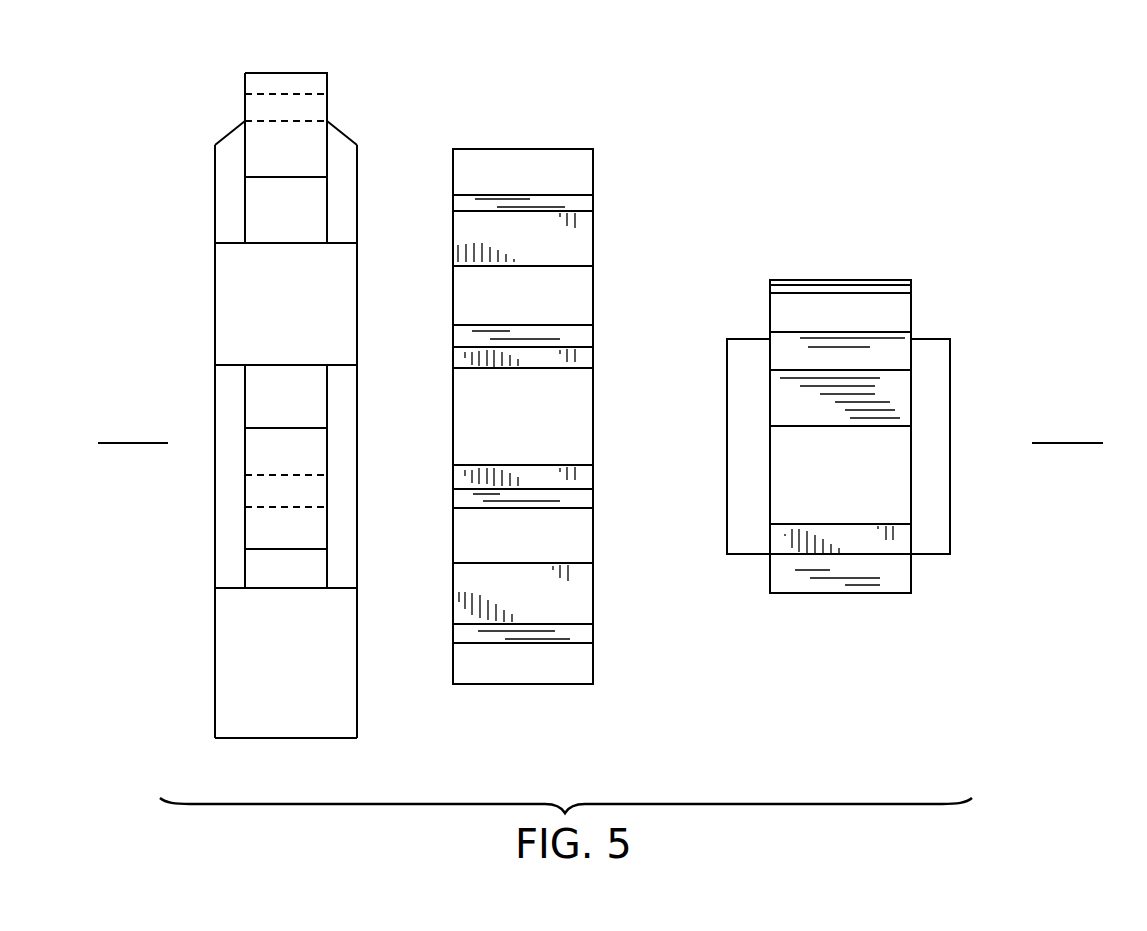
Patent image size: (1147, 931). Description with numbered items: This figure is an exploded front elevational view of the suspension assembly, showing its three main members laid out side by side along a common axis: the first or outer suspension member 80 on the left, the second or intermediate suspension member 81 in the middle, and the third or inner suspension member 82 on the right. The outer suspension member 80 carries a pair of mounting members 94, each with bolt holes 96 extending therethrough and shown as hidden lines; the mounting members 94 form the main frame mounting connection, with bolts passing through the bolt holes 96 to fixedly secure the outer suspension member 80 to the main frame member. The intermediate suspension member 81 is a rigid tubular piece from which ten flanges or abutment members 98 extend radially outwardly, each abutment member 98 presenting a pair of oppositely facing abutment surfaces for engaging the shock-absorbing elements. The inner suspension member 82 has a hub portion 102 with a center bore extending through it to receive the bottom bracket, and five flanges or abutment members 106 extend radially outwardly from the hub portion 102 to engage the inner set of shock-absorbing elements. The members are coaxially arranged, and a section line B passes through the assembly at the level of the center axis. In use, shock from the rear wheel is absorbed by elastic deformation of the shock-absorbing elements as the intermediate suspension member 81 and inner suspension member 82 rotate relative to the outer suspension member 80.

The outer suspension member 80 is at (259, 382).
The intermediate suspension member 81 is at (555, 367).
The inner suspension member 82 is at (845, 432).
The mounting members 94 is at (261, 307).
The bolt holes 96 is at (300, 97).
The abutment members 98 is at (593, 167).
The hub portion 102 is at (930, 340).
The abutment members 106 is at (831, 280).
The section line B is at (1060, 441).